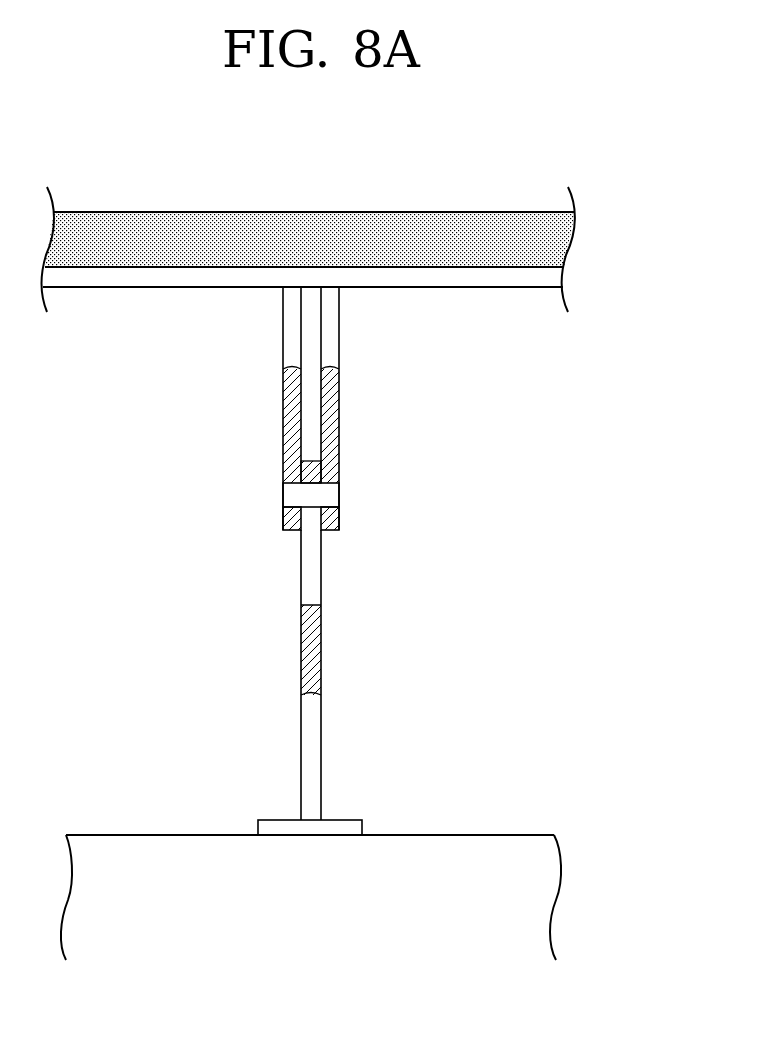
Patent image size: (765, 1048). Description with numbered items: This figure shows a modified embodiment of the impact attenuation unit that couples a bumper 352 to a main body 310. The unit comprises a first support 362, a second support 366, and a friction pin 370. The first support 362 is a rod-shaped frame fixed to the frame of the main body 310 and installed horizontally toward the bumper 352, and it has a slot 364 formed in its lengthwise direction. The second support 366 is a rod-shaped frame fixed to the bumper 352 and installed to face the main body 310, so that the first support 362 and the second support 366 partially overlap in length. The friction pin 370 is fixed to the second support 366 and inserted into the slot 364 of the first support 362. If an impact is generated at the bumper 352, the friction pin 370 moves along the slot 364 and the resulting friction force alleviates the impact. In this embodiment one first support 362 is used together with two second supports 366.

The upper plate 352 is at (389, 205).
The tube wall 366 is at (287, 332).
The cross band 370 is at (328, 496).
The rod upper portion 364 is at (312, 568).
The rod lower portion with base 362 is at (312, 743).
The substrate 310 is at (458, 835).